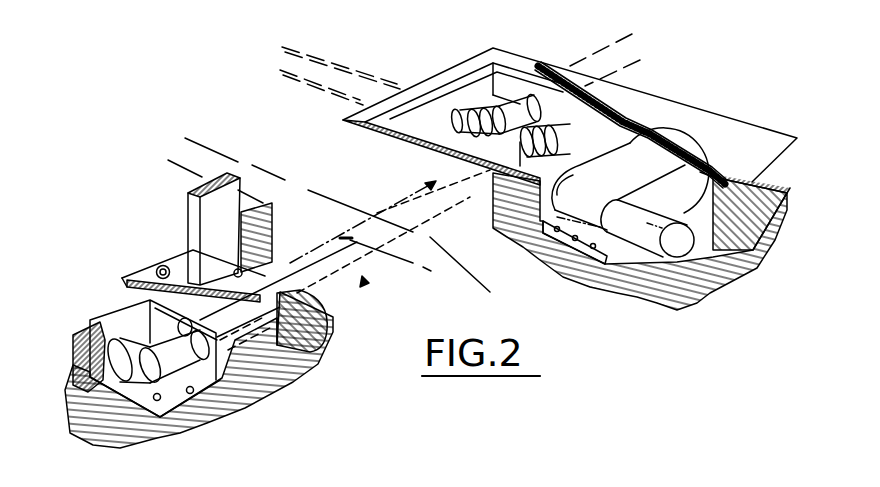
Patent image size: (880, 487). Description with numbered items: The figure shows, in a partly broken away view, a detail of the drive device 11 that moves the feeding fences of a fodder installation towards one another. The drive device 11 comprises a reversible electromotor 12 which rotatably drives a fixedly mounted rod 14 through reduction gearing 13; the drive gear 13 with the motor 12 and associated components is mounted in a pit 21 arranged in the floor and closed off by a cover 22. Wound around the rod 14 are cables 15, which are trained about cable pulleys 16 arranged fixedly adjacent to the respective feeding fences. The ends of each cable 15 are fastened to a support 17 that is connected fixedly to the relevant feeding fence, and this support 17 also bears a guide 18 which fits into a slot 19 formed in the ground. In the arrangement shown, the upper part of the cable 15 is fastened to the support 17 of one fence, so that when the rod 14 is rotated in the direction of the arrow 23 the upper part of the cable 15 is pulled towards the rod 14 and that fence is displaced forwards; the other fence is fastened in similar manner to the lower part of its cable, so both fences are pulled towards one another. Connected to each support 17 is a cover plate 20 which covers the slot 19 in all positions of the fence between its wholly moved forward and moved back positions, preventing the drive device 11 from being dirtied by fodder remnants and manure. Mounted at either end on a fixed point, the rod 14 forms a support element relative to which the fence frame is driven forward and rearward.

The drive device 11 is at (641, 255).
The reversible electromotor 12 is at (684, 246).
The reduction gearing 13 is at (637, 166).
The rod 14 is at (458, 112).
The cable 15 is at (313, 240).
The cable pulley 16 is at (213, 413).
The support 17 is at (190, 217).
The guide 18 is at (280, 362).
The slot 19 is at (114, 311).
The cover plate 20 is at (142, 265).
The pit 21 is at (760, 190).
The cover 22 is at (742, 128).
The arrow 23 is at (615, 108).